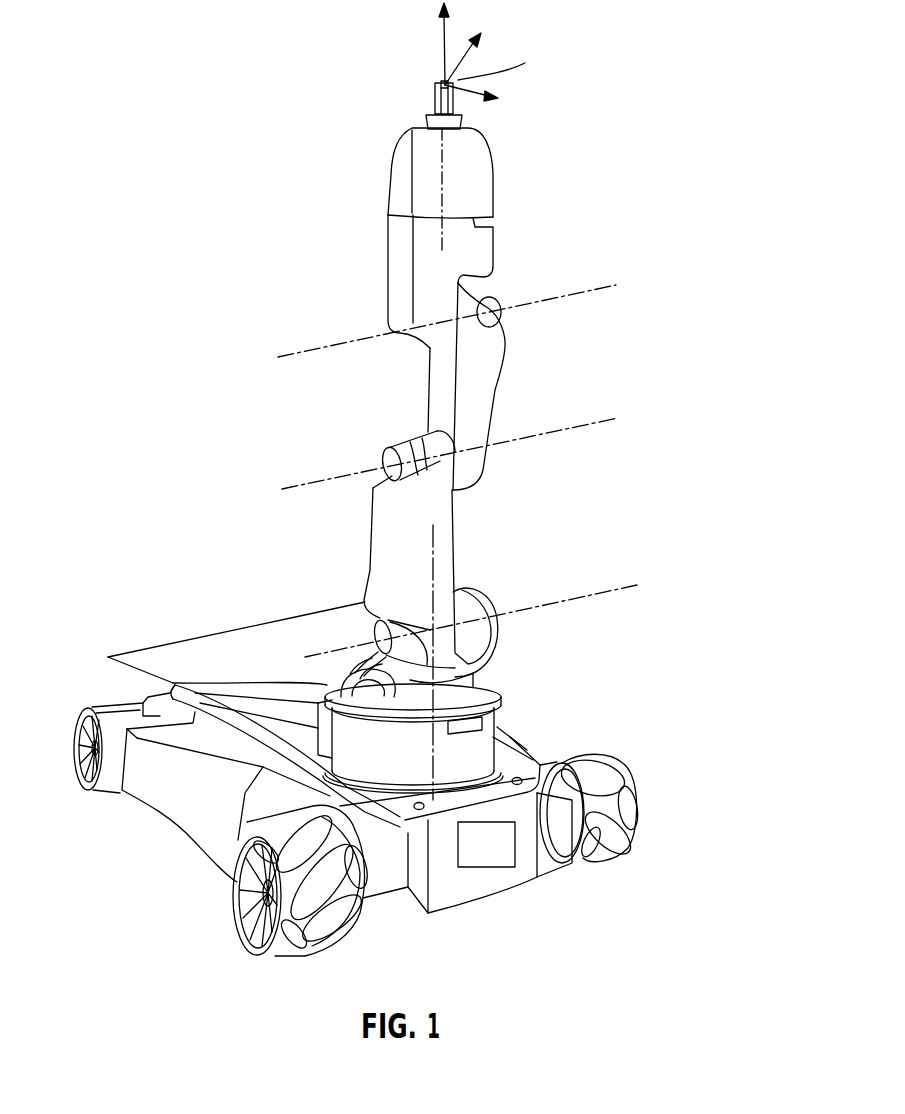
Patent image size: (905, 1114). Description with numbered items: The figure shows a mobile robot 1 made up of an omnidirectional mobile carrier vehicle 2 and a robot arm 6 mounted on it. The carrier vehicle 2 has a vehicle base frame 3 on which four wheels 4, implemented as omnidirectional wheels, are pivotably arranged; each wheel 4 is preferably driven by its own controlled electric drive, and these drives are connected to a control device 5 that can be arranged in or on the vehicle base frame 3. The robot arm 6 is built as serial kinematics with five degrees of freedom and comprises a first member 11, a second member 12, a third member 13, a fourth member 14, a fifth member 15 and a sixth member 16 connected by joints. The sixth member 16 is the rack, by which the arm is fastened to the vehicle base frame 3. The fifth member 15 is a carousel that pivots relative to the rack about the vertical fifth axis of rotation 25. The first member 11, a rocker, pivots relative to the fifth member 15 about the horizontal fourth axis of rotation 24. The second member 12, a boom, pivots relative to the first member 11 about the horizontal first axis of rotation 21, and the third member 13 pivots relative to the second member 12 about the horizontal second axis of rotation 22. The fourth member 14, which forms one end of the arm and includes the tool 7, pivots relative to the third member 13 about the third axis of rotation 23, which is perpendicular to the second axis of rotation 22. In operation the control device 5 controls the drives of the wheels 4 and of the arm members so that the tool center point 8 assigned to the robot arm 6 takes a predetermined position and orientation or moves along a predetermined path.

The mobile robot 1 is at (198, 608).
The carrier vehicle 2 is at (167, 832).
The vehicle base frame 3 is at (487, 893).
The wheels 4 is at (76, 745).
The control device 5 is at (494, 856).
The robot arm 6 is at (248, 413).
The tool 7 is at (437, 101).
The tool center point 8 is at (440, 80).
The first member 11 is at (405, 564).
The second member 12 is at (446, 399).
The third member 13 is at (426, 294).
The fourth member 14 is at (425, 184).
The fifth member 15 is at (465, 685).
The sixth member 16 is at (480, 735).
The first axis of rotation 21 is at (603, 425).
The second axis of rotation 22 is at (598, 291).
The third axis of rotation 23 is at (438, 250).
The fourth axis of rotation 24 is at (619, 592).
The fifth axis of rotation 25 is at (436, 547).